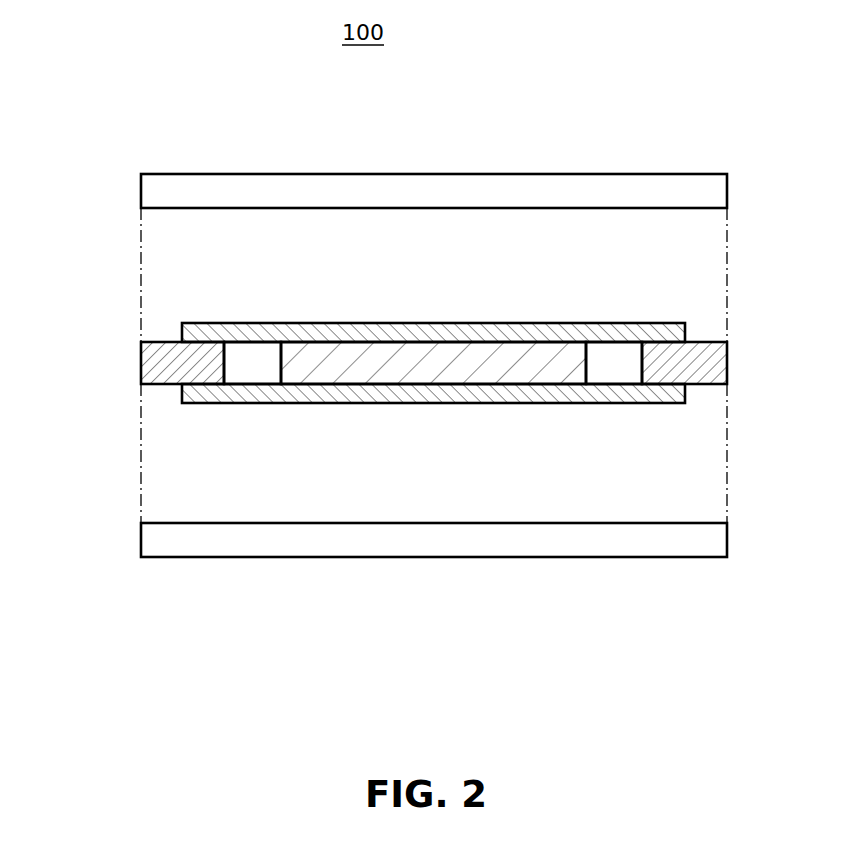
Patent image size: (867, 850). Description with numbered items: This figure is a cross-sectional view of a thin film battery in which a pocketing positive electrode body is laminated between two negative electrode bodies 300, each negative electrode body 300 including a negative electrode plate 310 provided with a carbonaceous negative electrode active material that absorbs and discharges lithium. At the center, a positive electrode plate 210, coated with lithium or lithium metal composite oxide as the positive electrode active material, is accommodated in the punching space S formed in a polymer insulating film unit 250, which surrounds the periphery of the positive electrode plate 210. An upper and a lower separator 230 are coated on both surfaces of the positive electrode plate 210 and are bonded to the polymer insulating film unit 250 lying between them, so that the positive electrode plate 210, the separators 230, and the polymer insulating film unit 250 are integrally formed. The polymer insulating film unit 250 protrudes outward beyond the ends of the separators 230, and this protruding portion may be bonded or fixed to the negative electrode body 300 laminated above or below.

The negative electrode body 300 is at (252, 156).
The negative electrode plate 310 is at (563, 192).
The polymer insulating film unit 250 is at (150, 350).
The positive electrode plate 210 is at (413, 360).
The separator 230 is at (493, 330).
The punching space S is at (262, 364).